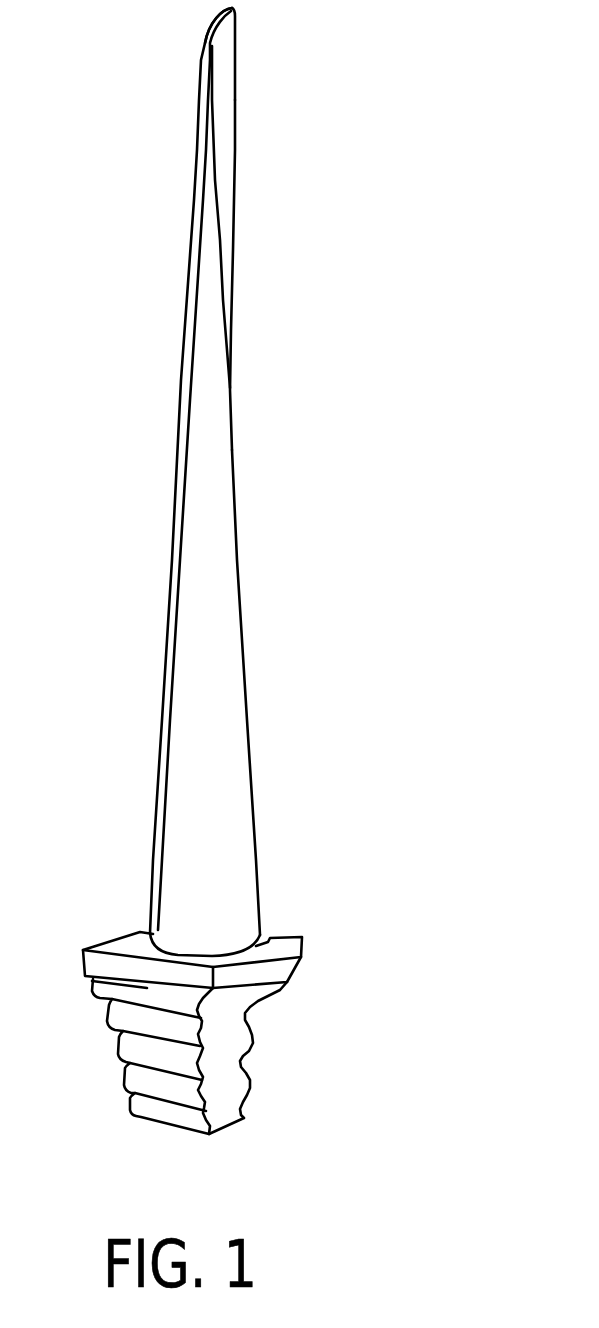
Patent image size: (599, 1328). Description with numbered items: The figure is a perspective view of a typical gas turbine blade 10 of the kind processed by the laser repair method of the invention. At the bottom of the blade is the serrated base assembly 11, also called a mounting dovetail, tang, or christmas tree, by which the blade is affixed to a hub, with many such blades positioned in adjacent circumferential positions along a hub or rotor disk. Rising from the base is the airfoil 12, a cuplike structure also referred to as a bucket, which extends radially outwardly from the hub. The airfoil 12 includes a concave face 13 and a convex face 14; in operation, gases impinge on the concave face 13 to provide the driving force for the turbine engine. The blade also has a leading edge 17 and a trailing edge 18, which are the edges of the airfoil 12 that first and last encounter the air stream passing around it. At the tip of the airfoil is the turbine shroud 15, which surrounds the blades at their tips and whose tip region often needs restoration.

The gas turbine blade 10 is at (165, 353).
The serrated base assembly 11 is at (242, 1060).
The airfoil 12 is at (167, 620).
The concave face 13 is at (228, 88).
The convex face 14 is at (225, 908).
The turbine shroud 15 is at (205, 44).
The leading edge 17 is at (235, 167).
The trailing edge 18 is at (247, 695).